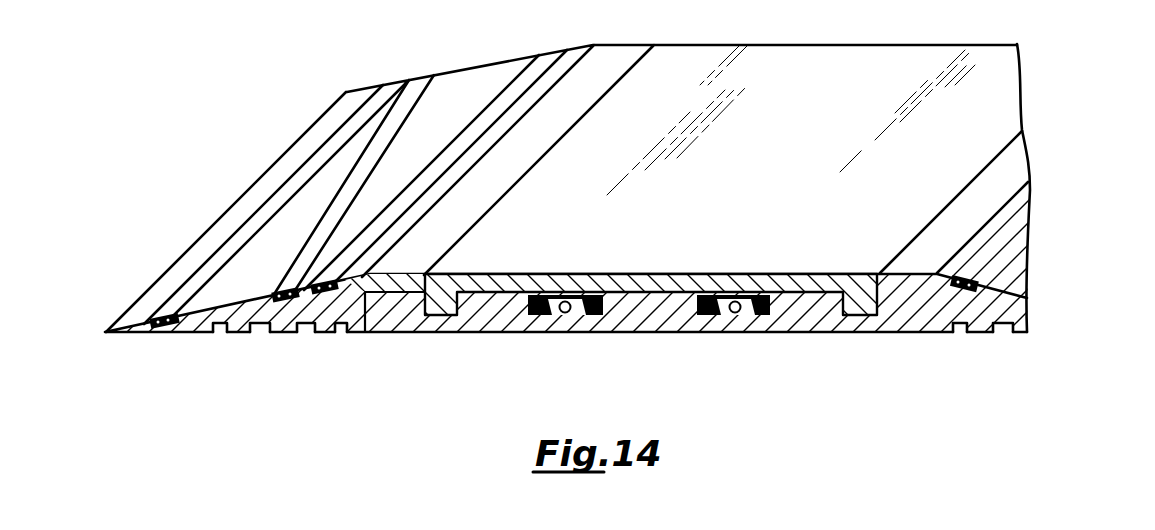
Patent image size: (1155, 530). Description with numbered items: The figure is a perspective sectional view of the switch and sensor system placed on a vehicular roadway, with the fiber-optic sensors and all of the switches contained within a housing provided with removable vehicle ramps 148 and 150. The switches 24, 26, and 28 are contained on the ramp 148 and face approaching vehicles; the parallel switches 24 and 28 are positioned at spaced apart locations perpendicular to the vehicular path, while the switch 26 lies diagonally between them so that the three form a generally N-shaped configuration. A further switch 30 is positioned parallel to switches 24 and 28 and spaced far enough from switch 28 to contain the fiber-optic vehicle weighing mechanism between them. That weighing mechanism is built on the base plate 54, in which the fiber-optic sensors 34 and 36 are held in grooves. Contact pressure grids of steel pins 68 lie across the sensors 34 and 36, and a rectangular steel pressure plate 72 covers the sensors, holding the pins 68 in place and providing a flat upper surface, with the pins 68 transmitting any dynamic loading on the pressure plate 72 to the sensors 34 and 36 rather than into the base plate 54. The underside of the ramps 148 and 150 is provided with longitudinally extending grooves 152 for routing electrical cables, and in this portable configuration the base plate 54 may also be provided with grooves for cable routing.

The removable ramp 148 is at (468, 87).
The switch 26 is at (387, 132).
The switch 24 is at (250, 228).
The switch 28 is at (388, 220).
The pins 68 is at (737, 294).
The pressure plate 72 is at (803, 274).
The removable ramp 150 is at (1015, 172).
The switch 30 is at (1030, 222).
The grooves 152 is at (298, 333).
The base plate 54 is at (485, 334).
The fiber-optic sensor 34 is at (587, 319).
The fiber-optic sensor 36 is at (745, 320).